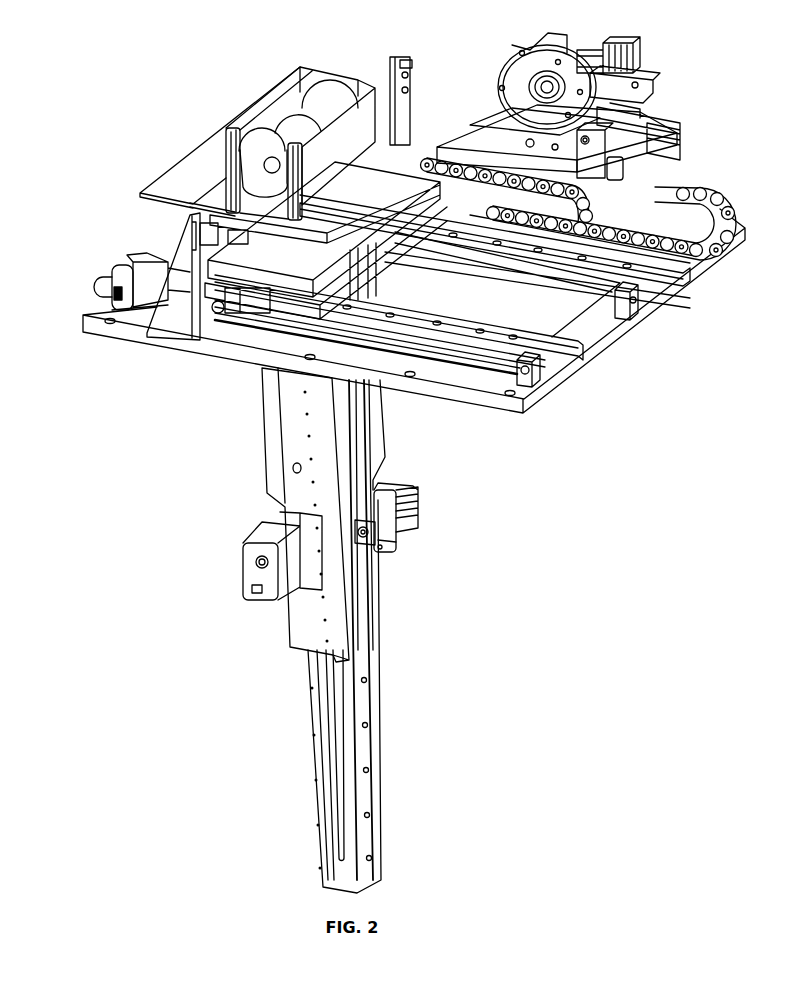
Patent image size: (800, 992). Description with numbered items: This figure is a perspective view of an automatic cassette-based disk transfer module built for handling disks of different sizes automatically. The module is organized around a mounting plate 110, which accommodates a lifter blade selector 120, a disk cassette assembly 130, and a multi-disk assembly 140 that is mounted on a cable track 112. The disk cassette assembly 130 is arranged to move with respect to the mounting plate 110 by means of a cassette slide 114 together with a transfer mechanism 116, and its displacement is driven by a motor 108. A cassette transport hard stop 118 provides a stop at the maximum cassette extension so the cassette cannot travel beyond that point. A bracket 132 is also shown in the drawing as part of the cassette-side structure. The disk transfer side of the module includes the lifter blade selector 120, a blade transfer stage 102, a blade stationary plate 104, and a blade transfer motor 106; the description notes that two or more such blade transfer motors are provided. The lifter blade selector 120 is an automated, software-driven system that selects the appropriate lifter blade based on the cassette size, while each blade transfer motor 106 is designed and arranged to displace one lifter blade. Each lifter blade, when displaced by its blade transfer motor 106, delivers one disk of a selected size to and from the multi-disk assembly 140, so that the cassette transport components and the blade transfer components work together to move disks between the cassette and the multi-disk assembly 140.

The blade transfer stage 102 is at (377, 768).
The blade stationary plate 104 is at (260, 443).
The blade transfer motor 106 is at (240, 572).
The motor 108 is at (103, 287).
The mounting plate 110 is at (720, 265).
The cable track 112 is at (718, 203).
The cassette slide 114 is at (588, 357).
The transfer mechanism 116 is at (540, 375).
The cassette transport hard stop 118 is at (638, 303).
The lifter blade selector 120 is at (167, 163).
The disk cassette assembly 130 is at (340, 67).
The bracket 132 is at (165, 327).
The multi-disk assembly 140 is at (707, 113).